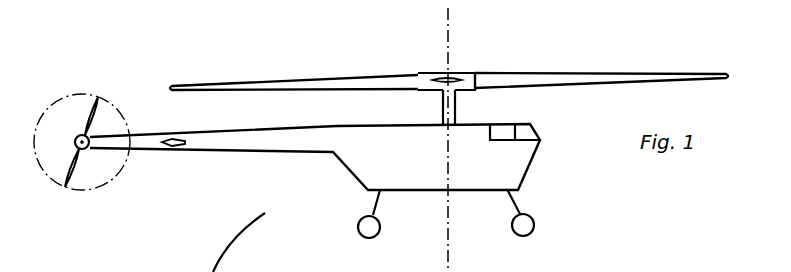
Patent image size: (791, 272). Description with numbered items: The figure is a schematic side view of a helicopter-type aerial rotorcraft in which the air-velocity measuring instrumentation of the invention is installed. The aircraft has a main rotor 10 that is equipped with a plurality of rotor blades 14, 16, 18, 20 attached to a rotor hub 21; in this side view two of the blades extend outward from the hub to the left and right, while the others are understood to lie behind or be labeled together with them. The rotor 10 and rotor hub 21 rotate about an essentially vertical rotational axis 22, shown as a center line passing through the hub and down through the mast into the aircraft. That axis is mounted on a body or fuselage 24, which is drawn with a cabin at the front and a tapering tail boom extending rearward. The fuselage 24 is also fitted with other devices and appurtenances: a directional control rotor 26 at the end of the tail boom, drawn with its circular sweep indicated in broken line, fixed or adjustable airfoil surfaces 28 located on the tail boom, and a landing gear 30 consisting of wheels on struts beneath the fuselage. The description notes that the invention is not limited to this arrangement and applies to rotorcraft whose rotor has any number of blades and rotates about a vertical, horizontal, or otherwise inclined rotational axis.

The rotor 10 is at (456, 106).
The rotor blade 14 is at (705, 73).
The rotor blade 16 is at (195, 86).
The rotor blade 18 is at (467, 73).
The rotor blade 20 is at (467, 73).
The rotor hub 21 is at (425, 72).
The rotational axis 22 is at (448, 33).
The fuselage 24 is at (531, 164).
The directional control rotor 26 is at (65, 188).
The airfoil surfaces 28 is at (177, 147).
The landing gear 30 is at (510, 208).